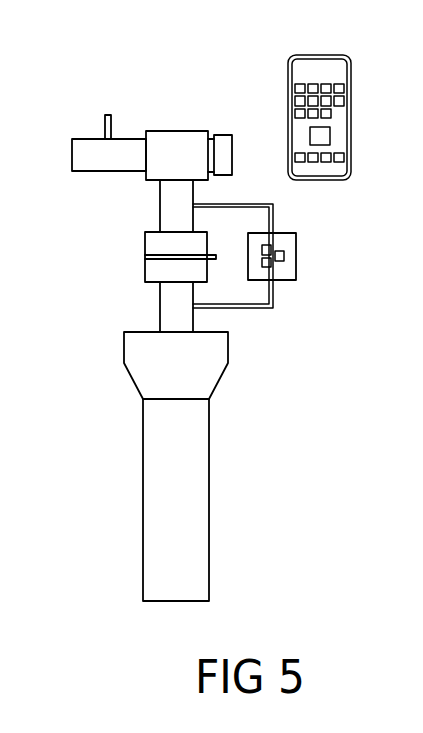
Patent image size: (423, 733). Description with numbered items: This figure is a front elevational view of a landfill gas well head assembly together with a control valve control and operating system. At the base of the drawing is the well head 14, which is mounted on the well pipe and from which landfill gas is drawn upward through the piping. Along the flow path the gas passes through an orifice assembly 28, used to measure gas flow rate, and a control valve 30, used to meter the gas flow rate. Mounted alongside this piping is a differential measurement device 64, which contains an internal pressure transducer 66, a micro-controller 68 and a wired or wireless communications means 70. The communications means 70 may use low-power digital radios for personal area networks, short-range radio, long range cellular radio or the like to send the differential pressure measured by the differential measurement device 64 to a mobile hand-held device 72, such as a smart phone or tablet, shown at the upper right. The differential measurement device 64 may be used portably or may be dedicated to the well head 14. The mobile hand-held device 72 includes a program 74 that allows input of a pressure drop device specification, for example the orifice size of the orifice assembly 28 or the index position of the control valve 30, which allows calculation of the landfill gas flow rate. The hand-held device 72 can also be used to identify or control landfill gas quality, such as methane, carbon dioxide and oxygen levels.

The well head 14 is at (145, 370).
The orifice assembly 28 is at (145, 268).
The control valve 30 is at (177, 140).
The differential measurement device 64 is at (292, 265).
The internal pressure transducer 66 is at (266, 245).
The micro-controller 68 is at (284, 256).
The wired or wireless communications means 70 is at (266, 262).
The mobile hand-held device 72 is at (347, 96).
The program 74 is at (323, 135).